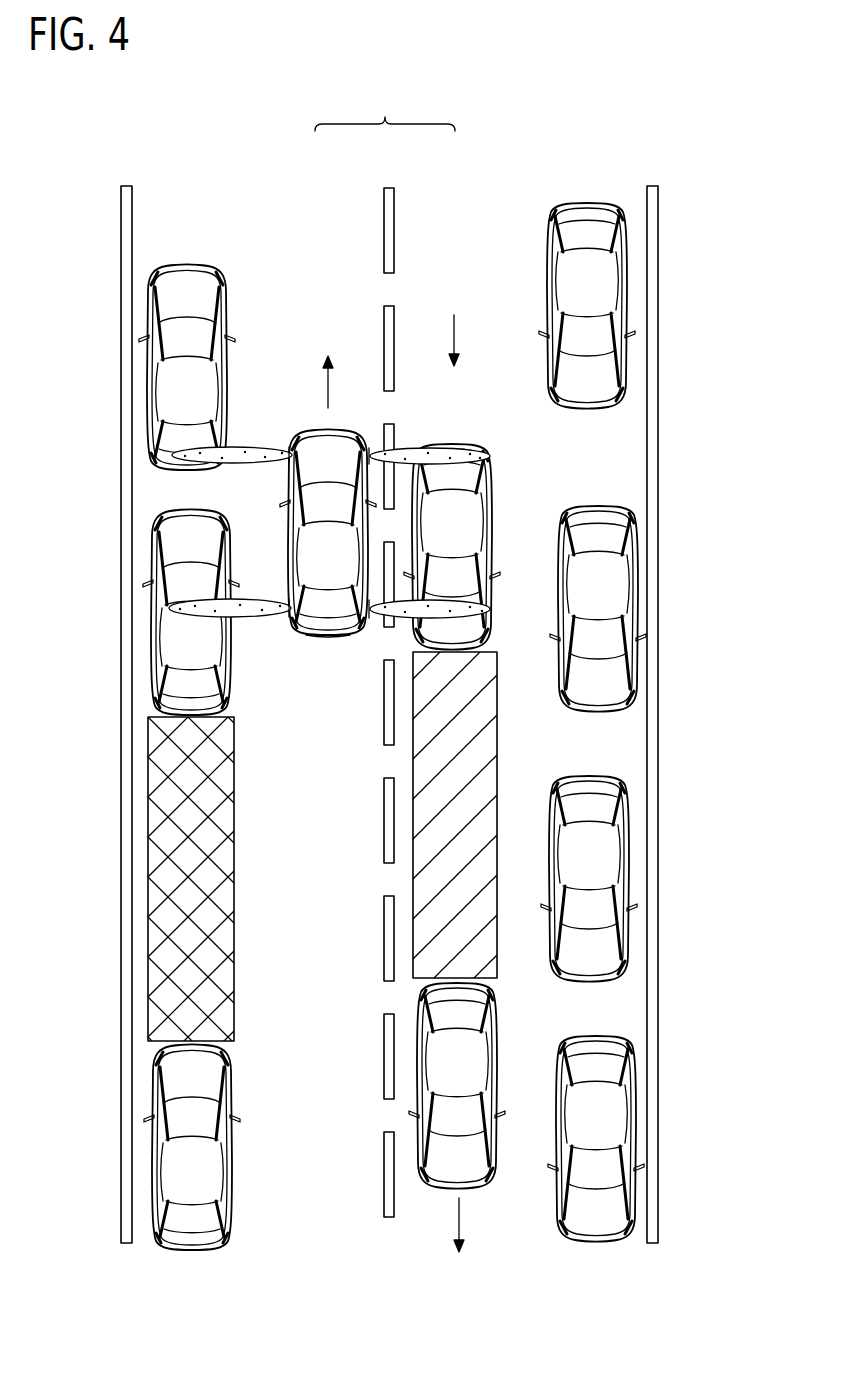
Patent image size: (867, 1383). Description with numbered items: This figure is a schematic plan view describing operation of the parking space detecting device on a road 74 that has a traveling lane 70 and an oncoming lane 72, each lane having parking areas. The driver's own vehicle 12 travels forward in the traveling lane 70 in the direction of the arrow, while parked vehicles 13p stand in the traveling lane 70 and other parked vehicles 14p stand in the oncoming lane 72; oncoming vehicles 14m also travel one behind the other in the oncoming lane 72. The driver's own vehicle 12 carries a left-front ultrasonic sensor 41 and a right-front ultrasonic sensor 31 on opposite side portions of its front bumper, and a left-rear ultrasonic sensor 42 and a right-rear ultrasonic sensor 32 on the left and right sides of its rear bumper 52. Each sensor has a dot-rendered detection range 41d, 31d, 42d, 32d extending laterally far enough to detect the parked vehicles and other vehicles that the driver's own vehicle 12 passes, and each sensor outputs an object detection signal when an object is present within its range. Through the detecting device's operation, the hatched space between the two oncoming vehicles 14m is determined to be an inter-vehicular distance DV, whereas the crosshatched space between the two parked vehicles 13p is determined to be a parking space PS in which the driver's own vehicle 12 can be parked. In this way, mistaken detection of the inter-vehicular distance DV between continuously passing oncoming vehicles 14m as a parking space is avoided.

The road 74 is at (385, 109).
The traveling lane 70 is at (327, 186).
The oncoming lane 72 is at (437, 186).
The parked vehicles 13p is at (146, 392).
The parked vehicles 14p is at (626, 277).
The oncoming vehicles 14m is at (495, 489).
The driver's own vehicle 12 is at (326, 600).
The rear bumper 52 is at (341, 638).
The left-front ultrasonic sensor 41 is at (288, 455).
The detection range 41d is at (242, 464).
The left-rear ultrasonic sensor 42 is at (275, 600).
The detection range 42d is at (258, 619).
The right-front ultrasonic sensor 31 is at (372, 452).
The detection range 31d is at (405, 456).
The right-rear ultrasonic sensor 32 is at (378, 612).
The detection range 32d is at (450, 612).
The parking space PS is at (160, 838).
The inter-vehicular distance DV is at (420, 884).